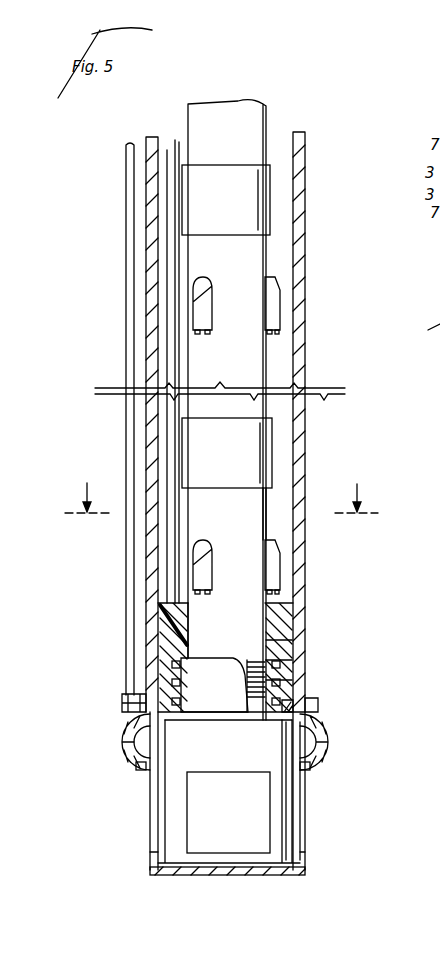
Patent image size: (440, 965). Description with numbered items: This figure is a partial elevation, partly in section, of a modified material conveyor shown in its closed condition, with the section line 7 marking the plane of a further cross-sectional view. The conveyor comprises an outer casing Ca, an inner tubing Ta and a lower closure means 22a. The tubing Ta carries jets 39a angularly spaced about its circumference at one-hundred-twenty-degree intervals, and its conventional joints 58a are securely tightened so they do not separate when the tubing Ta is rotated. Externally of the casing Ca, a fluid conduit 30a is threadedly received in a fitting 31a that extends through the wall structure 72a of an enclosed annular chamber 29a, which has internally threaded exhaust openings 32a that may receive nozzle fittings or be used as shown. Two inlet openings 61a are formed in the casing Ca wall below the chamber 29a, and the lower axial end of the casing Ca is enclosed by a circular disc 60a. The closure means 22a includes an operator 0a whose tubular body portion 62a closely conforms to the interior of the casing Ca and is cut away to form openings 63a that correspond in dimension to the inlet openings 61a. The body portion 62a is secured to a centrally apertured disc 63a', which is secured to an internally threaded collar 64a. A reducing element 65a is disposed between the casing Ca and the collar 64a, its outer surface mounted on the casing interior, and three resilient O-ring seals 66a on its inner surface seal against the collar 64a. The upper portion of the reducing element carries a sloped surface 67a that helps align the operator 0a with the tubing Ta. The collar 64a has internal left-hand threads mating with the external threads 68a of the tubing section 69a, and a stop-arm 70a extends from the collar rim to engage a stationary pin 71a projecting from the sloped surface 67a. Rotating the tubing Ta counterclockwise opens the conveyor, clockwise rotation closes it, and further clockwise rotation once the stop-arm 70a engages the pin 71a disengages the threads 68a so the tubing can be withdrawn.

The conventional joints 58a is at (195, 203).
The inner tubing Ta is at (205, 357).
The outer casing Ca is at (305, 421).
The section line 7- 7 is at (221, 487).
The tubing section 69a is at (272, 500).
The jets 39a is at (280, 556).
The fluid conduit 30a is at (133, 555).
The stationary pin 71a is at (160, 618).
The stop-arm 70a is at (160, 632).
The sloped surface 67a is at (288, 628).
The reducing element 65a is at (288, 645).
The resilient O-ring seals 66a is at (288, 662).
The internally threaded collar 64a is at (288, 683).
The centrally apertured disc 63a' is at (331, 702).
The external threads 68a is at (214, 685).
The tubular body portion 62a is at (322, 732).
The fitting 31a is at (122, 704).
The wall structure 72a is at (122, 740).
The enclosed annular chamber 29a is at (130, 748).
The exhaust openings 32a is at (138, 768).
The openings 63a is at (161, 812).
The operator 0a is at (290, 794).
The lower closure means 22a is at (315, 804).
The inlet openings 61a is at (152, 846).
The circular disc 60a is at (195, 870).